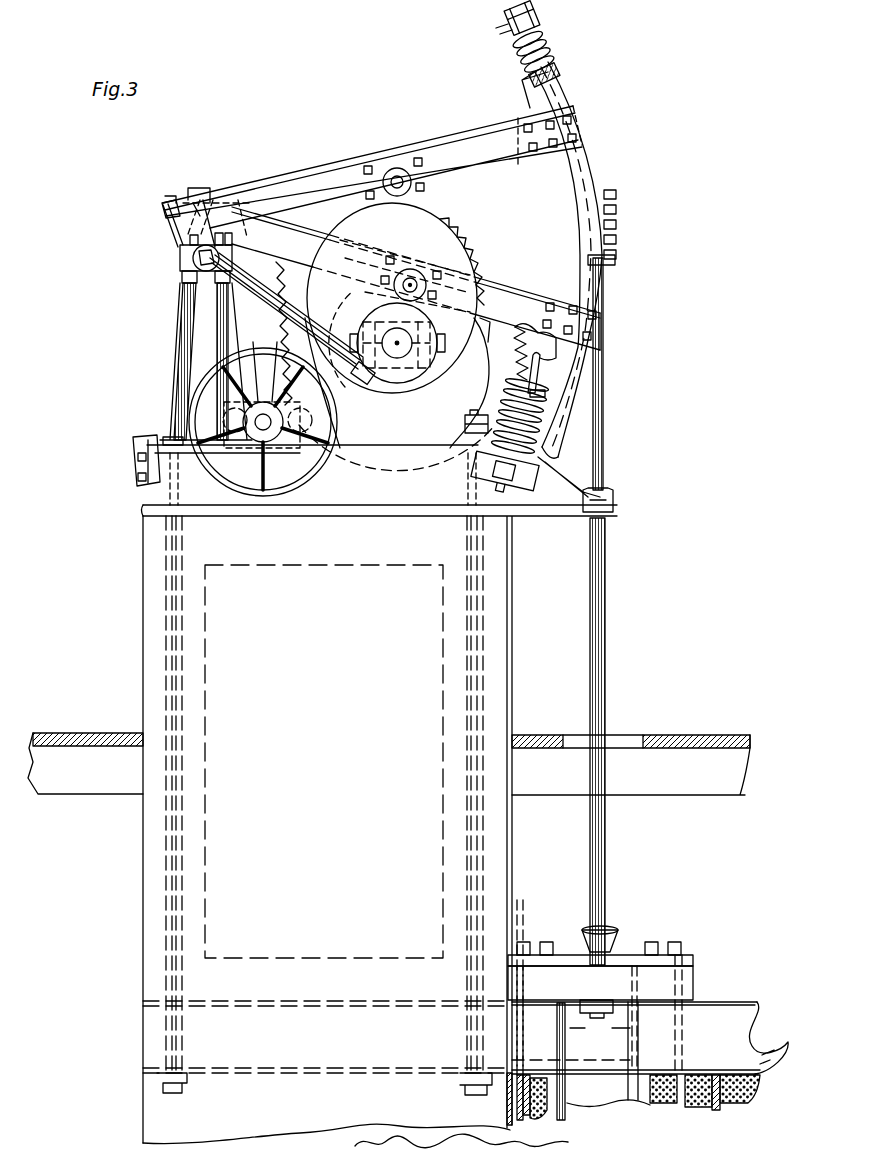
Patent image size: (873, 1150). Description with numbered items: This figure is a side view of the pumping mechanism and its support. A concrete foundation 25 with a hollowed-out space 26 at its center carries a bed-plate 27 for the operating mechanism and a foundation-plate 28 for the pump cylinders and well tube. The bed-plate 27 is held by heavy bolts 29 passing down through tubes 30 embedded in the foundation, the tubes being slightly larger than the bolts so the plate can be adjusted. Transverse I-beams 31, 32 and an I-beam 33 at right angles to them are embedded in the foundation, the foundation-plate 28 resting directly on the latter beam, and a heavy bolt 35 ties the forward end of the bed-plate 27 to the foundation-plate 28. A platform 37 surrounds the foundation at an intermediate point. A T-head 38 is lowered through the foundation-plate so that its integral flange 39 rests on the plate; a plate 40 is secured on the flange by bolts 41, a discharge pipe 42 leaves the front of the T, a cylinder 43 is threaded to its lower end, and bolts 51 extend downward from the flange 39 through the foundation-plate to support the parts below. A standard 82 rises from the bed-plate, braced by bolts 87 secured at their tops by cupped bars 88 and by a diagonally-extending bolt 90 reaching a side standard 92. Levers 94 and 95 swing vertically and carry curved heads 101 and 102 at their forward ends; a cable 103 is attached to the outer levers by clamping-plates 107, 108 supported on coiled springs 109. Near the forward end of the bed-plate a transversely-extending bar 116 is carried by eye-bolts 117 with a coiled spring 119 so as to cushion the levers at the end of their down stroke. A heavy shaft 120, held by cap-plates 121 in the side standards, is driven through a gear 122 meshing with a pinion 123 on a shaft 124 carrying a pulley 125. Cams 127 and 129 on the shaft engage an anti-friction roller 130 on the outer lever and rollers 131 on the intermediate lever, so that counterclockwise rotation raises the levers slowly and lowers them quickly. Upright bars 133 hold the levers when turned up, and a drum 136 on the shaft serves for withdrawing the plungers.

The foundation 25 is at (148, 893).
The hollowed-out space 26 is at (207, 680).
The bed-plate 27 is at (152, 478).
The foundation-plate 28 is at (665, 985).
The bolts 29 is at (165, 838).
The tubes 30 is at (162, 948).
The I-beam 31 is at (525, 1122).
The I-beam 32 is at (725, 1110).
The I-beam 33 is at (735, 1012).
The bolt 35 is at (605, 826).
The platform 37 is at (60, 734).
The T-head 38 is at (595, 1072).
The flange 39 is at (586, 956).
The plate 40 is at (625, 950).
The bolts 41 is at (540, 942).
The discharge pipe 42 is at (772, 1056).
The cylinder 43 is at (572, 1106).
The bolts 51 is at (600, 1020).
The standard 82 is at (185, 330).
The bolts 87 is at (186, 300).
The cupped bars 88 is at (185, 255).
The diagonally-extending bolt 90 is at (275, 300).
The standard 92 is at (436, 404).
The lever 94 is at (562, 293).
The lever 95 is at (312, 185).
The curved head 101 is at (590, 390).
The curved head 102 is at (577, 190).
The cable 103 is at (605, 450).
The clamping-plates 107 is at (540, 10).
The clamping-plates 108 is at (498, 24).
The coiled springs 109 is at (560, 46).
The transversely-extending bar 116 is at (558, 362).
The eye-bolts 117 is at (540, 377).
The coiled spring 119 is at (565, 427).
The shaft 120 is at (396, 358).
The cap-plates 121 is at (362, 325).
The gear 122 is at (270, 337).
The pinion 123 is at (252, 392).
The shaft 124 is at (352, 458).
The pulley 125 is at (322, 472).
The cam 127 is at (445, 234).
The cam 129 is at (486, 332).
The anti-friction roller 130 is at (400, 197).
The anti-friction rollers 131 is at (372, 261).
The upright bars 133 is at (145, 437).
The drum 136 is at (380, 377).